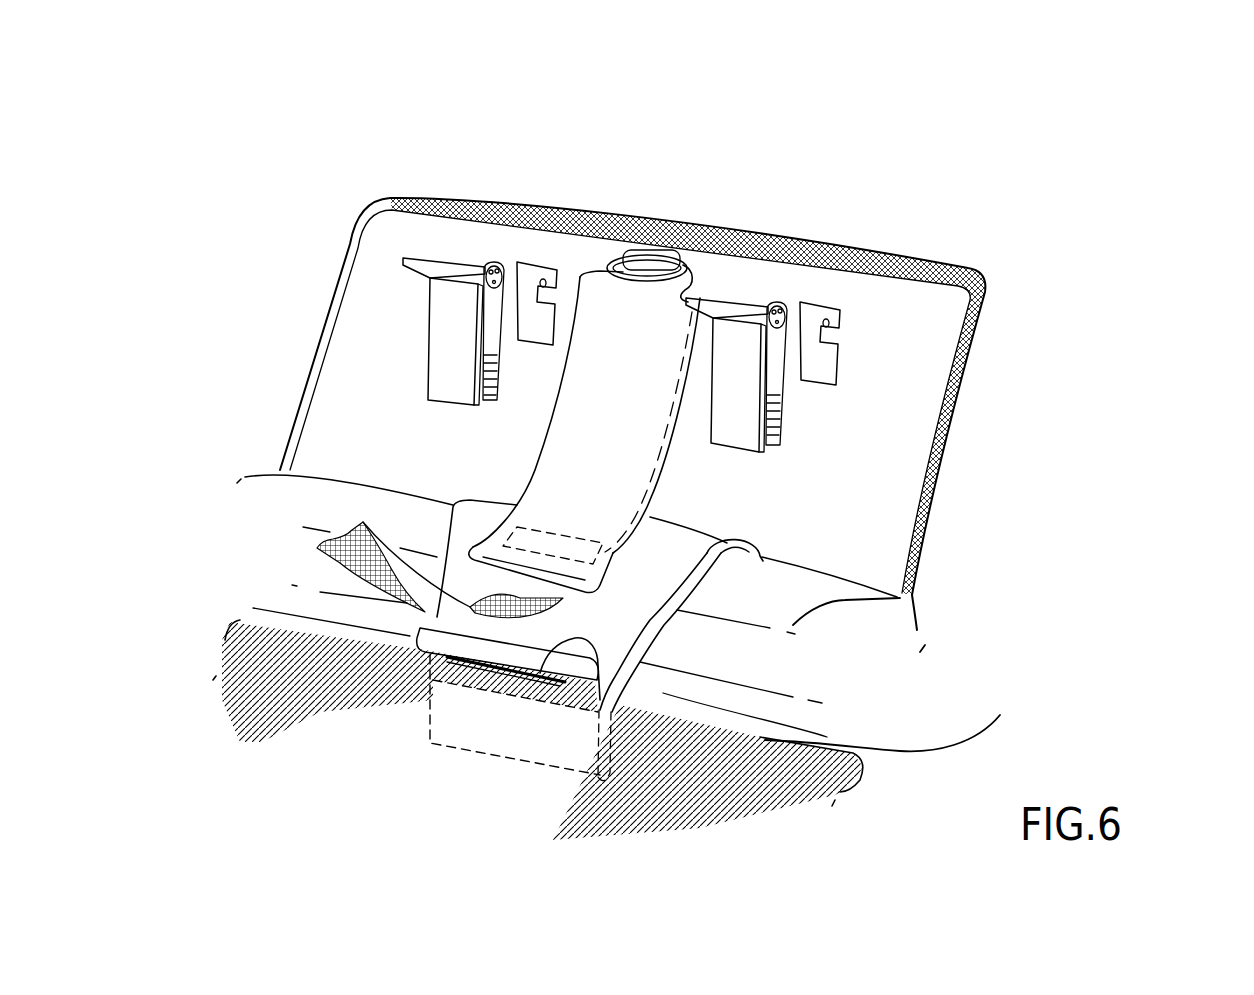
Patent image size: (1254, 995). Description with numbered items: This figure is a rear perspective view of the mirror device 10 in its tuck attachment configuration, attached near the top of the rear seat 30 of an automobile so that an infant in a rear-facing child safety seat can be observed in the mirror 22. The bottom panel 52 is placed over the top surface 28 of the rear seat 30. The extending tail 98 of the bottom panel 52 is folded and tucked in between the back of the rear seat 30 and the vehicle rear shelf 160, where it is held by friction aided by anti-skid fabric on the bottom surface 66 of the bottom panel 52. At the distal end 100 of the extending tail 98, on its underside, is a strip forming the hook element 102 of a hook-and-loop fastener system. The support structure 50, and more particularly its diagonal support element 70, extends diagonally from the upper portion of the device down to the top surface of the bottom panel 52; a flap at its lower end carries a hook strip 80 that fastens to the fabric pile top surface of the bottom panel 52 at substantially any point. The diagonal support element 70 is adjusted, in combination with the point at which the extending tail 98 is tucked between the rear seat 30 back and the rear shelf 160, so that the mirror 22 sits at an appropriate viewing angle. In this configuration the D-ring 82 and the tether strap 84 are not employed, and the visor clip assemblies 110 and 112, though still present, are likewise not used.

The mirror device 10 is at (1112, 388).
The mirror 22 is at (978, 393).
The top surface 28 is at (870, 600).
The rear seat 30 is at (925, 645).
The support structure 50 is at (462, 428).
The bottom panel 52 is at (667, 543).
The bottom surface 66 is at (650, 627).
The diagonal support element 70 is at (624, 397).
The strip 80 is at (573, 548).
The D-ring 82 is at (610, 268).
The tether strap 84 is at (403, 580).
The extending tail 98 is at (602, 670).
The distal end 100 is at (563, 645).
The hook element 102 is at (420, 628).
The visor clip assembly 110 is at (380, 318).
The visor clip assembly 112 is at (925, 333).
The vehicle rear shelf 160 is at (1000, 715).